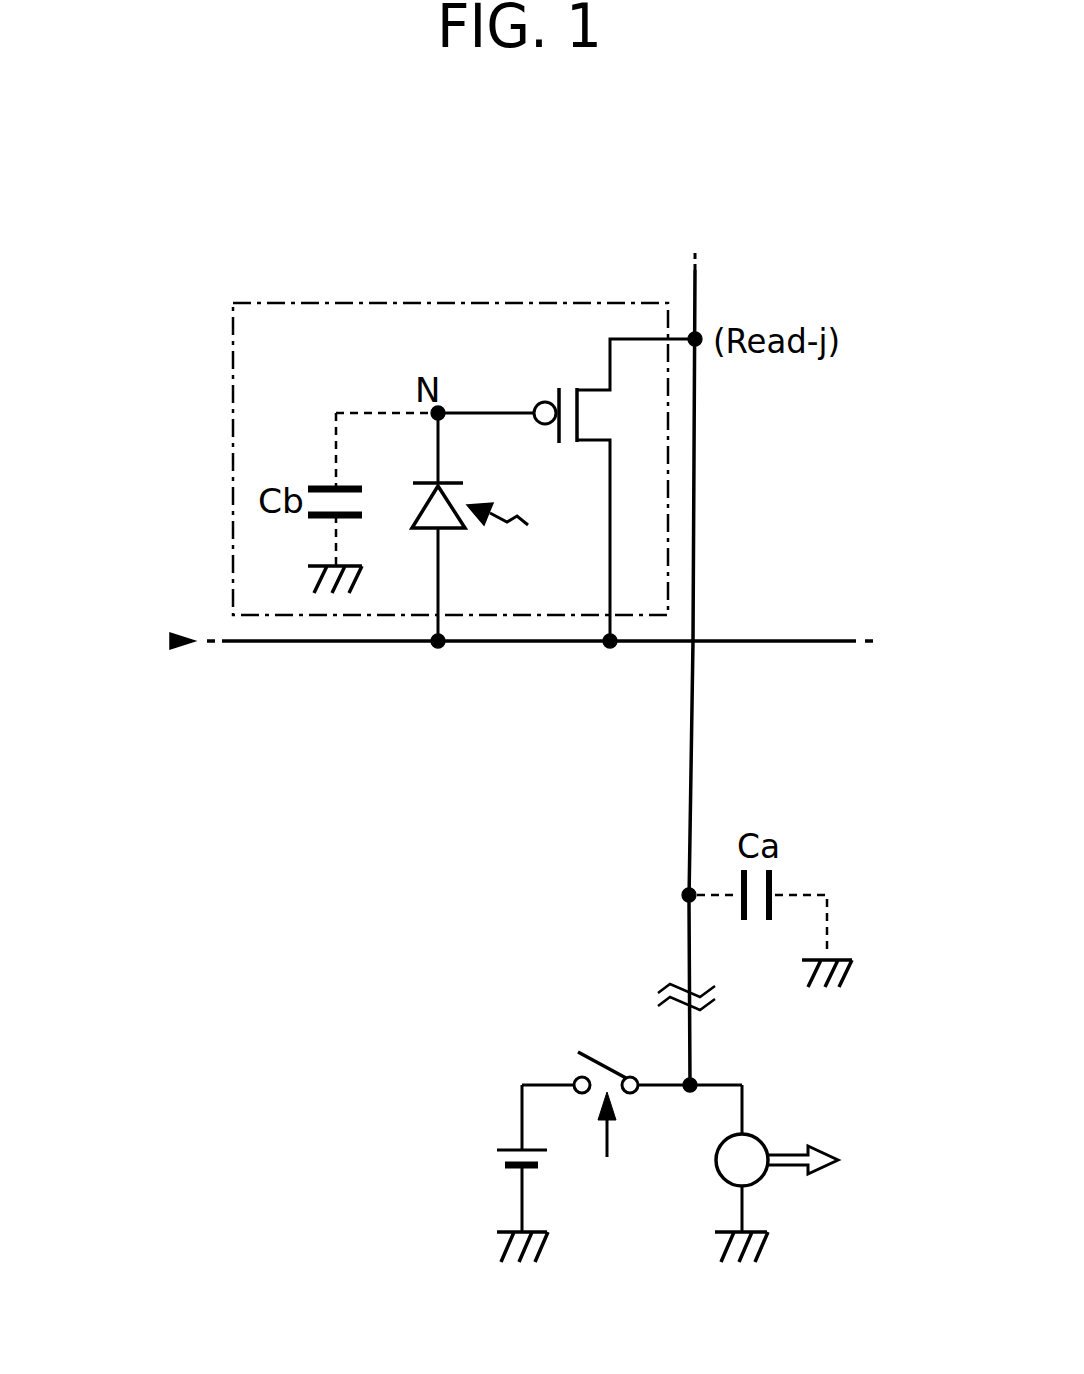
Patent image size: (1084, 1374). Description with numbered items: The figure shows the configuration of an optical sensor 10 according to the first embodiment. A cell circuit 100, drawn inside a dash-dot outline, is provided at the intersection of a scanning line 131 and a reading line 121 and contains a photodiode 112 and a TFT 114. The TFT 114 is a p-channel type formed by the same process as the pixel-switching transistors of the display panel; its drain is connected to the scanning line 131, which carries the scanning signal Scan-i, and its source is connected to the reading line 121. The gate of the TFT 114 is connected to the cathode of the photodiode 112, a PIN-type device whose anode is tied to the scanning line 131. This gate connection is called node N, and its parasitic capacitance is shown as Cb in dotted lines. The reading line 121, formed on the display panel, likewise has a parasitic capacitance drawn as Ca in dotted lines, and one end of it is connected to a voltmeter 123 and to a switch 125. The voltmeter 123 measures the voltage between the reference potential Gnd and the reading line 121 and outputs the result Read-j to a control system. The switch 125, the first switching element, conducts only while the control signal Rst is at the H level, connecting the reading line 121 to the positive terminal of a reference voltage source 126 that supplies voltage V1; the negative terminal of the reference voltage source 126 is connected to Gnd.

The photosensor circuit 10 is at (598, 242).
The cell circuit 100 is at (233, 375).
The photodiode 112 is at (422, 510).
The TFT 114 is at (577, 390).
The reading line 121 is at (687, 763).
The voltmeter 123 is at (762, 1136).
The switch 125 is at (607, 1052).
The reference voltage source 126 is at (497, 1154).
The scanning line 131 is at (780, 641).